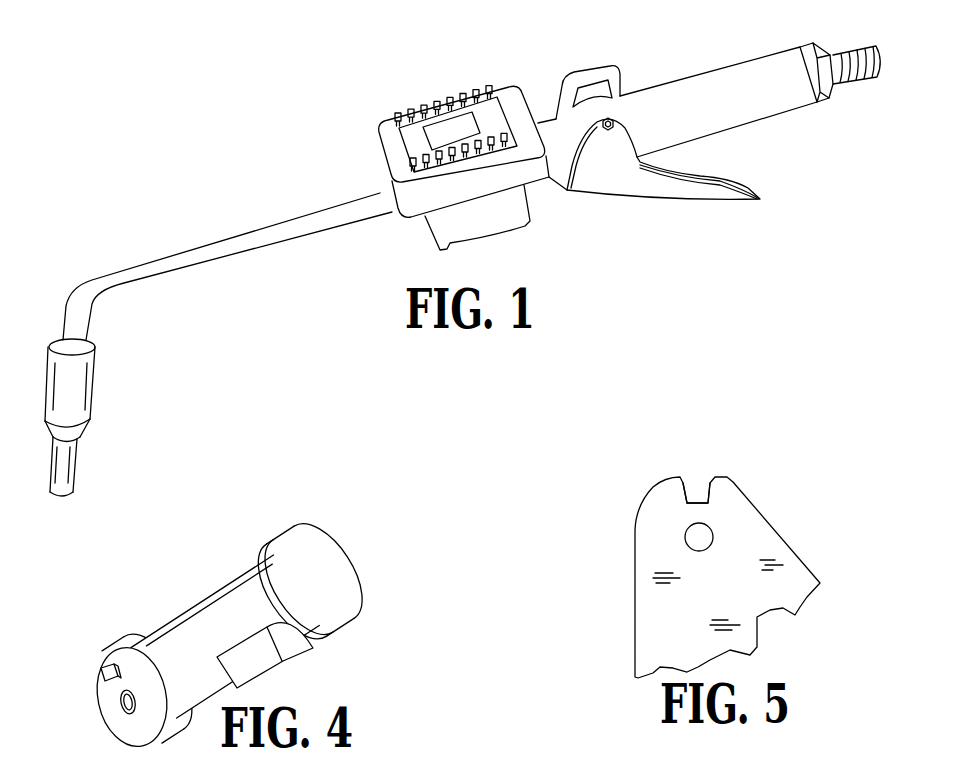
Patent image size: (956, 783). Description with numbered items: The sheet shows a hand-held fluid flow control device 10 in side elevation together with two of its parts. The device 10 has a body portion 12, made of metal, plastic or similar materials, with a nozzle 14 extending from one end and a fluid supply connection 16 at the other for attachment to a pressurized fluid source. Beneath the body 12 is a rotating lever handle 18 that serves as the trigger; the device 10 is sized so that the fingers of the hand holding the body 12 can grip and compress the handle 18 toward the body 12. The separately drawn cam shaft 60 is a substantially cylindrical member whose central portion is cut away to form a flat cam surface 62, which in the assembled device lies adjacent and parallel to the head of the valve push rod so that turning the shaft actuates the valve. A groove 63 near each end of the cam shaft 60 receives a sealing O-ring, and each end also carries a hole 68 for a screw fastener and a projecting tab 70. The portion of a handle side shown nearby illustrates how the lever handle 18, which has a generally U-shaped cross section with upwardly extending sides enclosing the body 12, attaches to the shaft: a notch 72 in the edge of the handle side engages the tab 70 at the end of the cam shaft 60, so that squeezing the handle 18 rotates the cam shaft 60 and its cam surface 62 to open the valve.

In FIG. 1, the fluid flow control device 10 is at (232, 212).
In FIG. 1, the body portion 12 is at (669, 89).
In FIG. 1, the nozzle 14 is at (159, 260).
In FIG. 1, the fluid supply connection 16 is at (851, 39).
In FIG. 1, the lever handle 18 is at (650, 190).
In FIG. 5, the lever handle 18 is at (753, 520).
In FIG. 4, the cam shaft 60 is at (247, 600).
In FIG. 4, the flat cam surface 62 is at (284, 662).
In FIG. 4, the groove 63 is at (283, 555).
In FIG. 4, the hole 68 is at (127, 703).
In FIG. 4, the tab 70 is at (101, 675).
In FIG. 5, the notch 72 is at (707, 480).